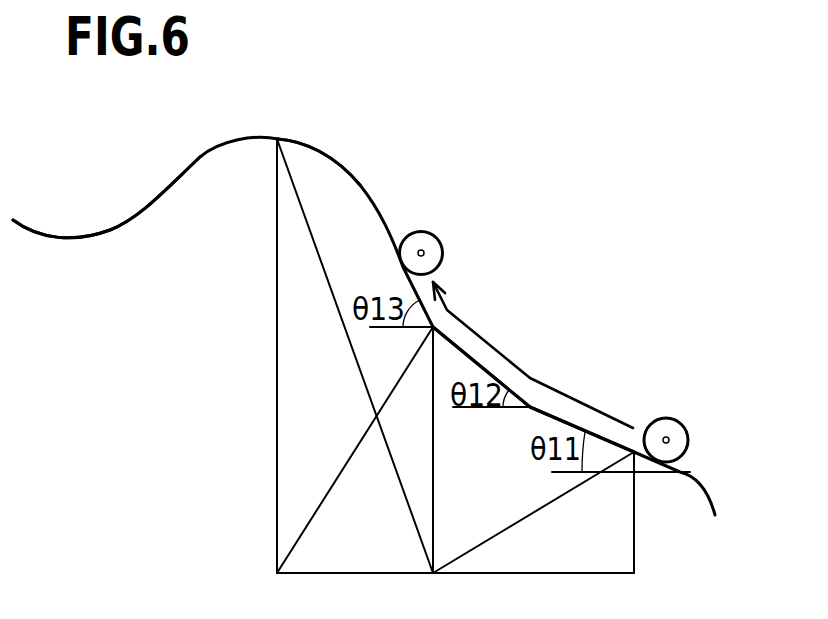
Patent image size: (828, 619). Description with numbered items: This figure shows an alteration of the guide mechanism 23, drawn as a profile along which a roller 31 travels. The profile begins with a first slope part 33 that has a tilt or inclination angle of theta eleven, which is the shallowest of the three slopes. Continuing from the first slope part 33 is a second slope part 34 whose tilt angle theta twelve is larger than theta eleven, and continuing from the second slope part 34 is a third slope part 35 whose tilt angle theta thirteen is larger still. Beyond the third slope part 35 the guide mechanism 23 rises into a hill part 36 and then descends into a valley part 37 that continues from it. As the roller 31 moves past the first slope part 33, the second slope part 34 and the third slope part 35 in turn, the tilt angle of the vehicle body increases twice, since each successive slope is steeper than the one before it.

The guide mechanism 23 is at (380, 178).
The roller 31 is at (683, 427).
The first slope part 33 is at (585, 432).
The second slope part 34 is at (490, 372).
The third slope part 35 is at (388, 225).
The hill part 36 is at (323, 150).
The valley part 37 is at (94, 236).